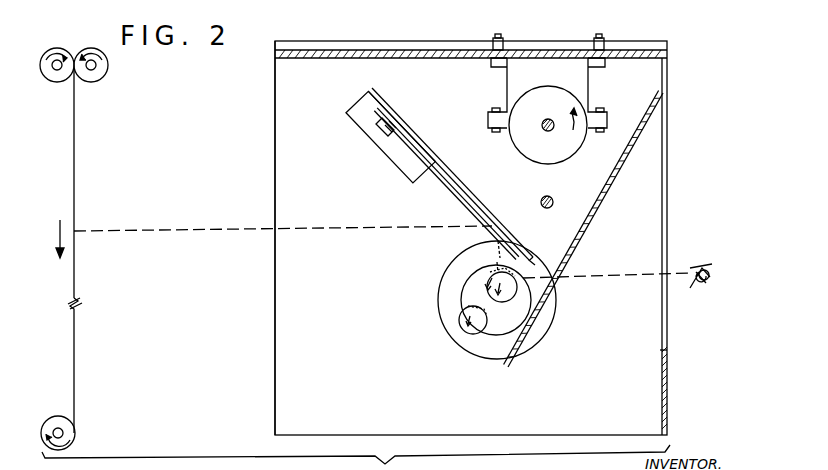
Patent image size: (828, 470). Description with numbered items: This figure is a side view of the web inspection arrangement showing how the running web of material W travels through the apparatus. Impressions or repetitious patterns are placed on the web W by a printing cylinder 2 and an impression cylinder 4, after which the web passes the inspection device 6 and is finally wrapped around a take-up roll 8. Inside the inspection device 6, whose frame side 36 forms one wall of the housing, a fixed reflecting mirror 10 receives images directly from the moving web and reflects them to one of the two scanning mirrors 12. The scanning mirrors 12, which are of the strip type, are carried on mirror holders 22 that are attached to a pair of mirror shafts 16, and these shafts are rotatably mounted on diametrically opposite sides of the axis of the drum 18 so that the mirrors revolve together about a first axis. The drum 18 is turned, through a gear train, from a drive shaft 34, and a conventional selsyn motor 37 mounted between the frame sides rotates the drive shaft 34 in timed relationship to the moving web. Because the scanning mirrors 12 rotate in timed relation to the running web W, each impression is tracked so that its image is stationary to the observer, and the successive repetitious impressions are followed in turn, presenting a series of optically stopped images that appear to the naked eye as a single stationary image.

The printing cylinder 2 is at (62, 75).
The impression cylinder 4 is at (94, 77).
The inspection device 6 is at (262, 97).
The take-up roll 8 is at (70, 438).
The fixed reflecting mirror 10 is at (452, 188).
The scanning mirrors 12 is at (495, 275).
The mirror shafts 16 is at (513, 283).
The drum 18 is at (463, 297).
The mirror holders 22 is at (496, 288).
The drive shaft 34 is at (544, 128).
The frame side 36 is at (275, 139).
The selsyn motor 37 is at (522, 103).
The running web of material W is at (75, 168).